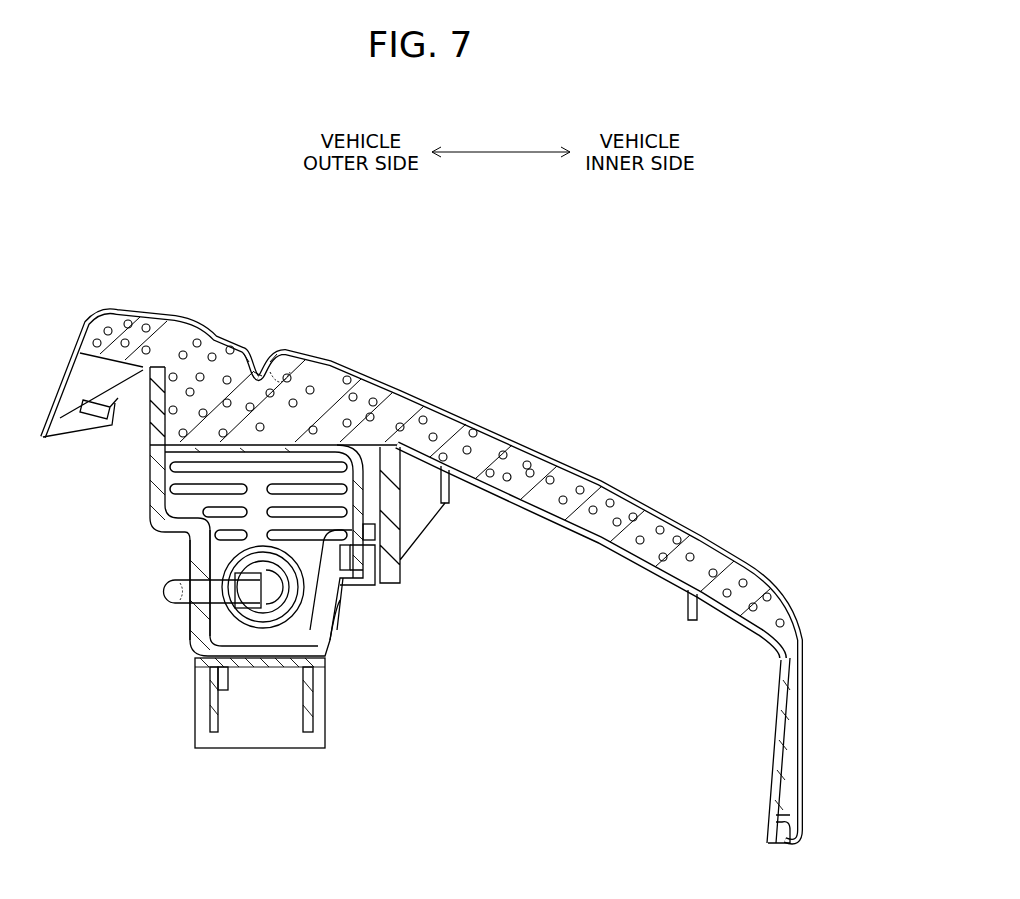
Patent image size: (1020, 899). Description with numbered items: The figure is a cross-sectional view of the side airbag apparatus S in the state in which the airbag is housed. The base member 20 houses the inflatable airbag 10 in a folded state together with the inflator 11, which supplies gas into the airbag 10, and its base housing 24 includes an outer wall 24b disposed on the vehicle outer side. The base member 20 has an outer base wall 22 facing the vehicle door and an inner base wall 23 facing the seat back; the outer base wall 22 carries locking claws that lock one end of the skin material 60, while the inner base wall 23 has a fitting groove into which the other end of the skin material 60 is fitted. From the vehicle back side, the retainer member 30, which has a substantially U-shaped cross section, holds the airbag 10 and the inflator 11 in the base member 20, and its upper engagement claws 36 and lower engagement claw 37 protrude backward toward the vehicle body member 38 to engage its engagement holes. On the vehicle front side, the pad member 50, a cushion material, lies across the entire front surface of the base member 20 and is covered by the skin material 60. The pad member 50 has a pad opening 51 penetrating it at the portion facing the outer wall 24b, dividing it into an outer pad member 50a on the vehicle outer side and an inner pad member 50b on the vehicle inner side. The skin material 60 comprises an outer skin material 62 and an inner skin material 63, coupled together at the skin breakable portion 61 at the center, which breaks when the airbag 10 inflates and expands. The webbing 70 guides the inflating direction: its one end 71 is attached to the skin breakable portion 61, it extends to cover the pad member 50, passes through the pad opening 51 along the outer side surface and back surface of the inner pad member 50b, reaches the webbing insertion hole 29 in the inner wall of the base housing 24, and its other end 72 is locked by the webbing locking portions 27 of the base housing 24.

The side airbag apparatus S is at (120, 198).
The pad member 50 is at (212, 262).
The outer pad member 50a is at (118, 345).
The pad opening 51 is at (163, 340).
The inner pad member 50b is at (215, 330).
The skin material 60 is at (236, 262).
The outer skin material 62 is at (240, 345).
The skin breakable portion 61 is at (264, 368).
The inner skin material 63 is at (313, 348).
The one end of the webbing 71 is at (300, 395).
The webbing 70 is at (373, 457).
The outer base wall 22 is at (80, 420).
The airbag 10 is at (175, 496).
The outer wall 24b is at (185, 565).
The base housing 24 is at (190, 630).
The upper engagement claws 36 is at (202, 683).
The lower engagement claw 37 is at (308, 699).
The vehicle body member 38 is at (260, 728).
The retainer member 30 is at (347, 637).
The inflator 11 is at (340, 600).
The webbing insertion hole 29 is at (375, 540).
The webbing locking portions 27 is at (366, 550).
The other end of the webbing 72 is at (365, 572).
The base member 20 is at (553, 530).
The inner base wall 23 is at (777, 803).